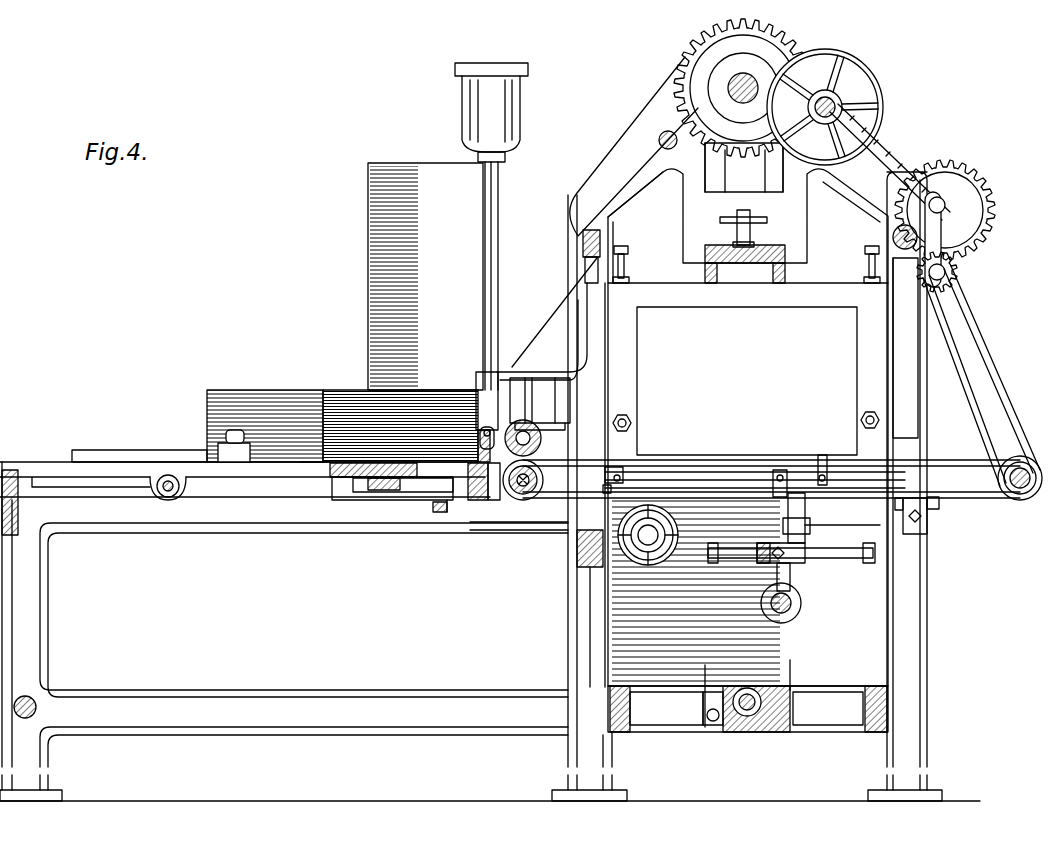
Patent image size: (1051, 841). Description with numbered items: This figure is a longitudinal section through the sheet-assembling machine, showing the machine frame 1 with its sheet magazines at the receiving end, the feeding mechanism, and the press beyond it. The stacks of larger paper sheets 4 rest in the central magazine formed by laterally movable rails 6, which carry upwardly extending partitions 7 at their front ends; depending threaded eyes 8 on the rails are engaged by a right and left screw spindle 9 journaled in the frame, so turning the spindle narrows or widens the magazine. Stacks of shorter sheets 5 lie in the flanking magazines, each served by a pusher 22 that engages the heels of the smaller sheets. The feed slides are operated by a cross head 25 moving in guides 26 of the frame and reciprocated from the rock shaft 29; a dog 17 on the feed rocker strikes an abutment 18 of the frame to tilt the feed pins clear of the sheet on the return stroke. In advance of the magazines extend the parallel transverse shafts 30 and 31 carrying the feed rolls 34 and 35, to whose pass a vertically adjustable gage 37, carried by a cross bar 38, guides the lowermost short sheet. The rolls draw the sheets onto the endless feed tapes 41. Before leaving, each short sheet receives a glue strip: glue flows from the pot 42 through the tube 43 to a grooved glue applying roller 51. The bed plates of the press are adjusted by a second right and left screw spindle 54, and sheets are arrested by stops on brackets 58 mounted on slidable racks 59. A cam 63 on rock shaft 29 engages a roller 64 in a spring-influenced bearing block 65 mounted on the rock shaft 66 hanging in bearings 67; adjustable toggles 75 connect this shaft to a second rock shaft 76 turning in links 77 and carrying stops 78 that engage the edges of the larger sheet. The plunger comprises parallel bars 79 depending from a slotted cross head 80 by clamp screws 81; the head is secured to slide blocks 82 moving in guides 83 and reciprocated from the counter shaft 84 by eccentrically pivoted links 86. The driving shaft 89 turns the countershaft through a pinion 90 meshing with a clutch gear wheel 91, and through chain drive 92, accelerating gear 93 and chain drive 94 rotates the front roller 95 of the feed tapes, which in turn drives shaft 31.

The machine frame 1 is at (357, 480).
The larger paper sheets 4 is at (288, 396).
The shorter sheets 5 is at (433, 396).
The laterally movable rails 6 is at (120, 470).
The plates or partitions 7 is at (366, 236).
The threaded eyes 8 is at (187, 498).
The right and left screw spindle 9 is at (166, 493).
The dog 17 is at (447, 512).
The abutment 18 is at (432, 513).
The pusher 22 is at (318, 462).
The cross head 25 is at (397, 490).
The guides 26 is at (365, 495).
The rock shaft 29 is at (799, 599).
The transverse shaft 30 is at (525, 428).
The transverse shaft 31 is at (523, 492).
The feed roll 34 is at (542, 441).
The feed roll 35 is at (544, 480).
The vertically adjustable gage 37 is at (485, 370).
The cross bar 38 is at (478, 503).
The endless feed tapes 41 is at (977, 497).
The glue pot 42 is at (520, 110).
The tube 43 is at (517, 202).
The glue applying roller 51 is at (497, 455).
The right and left screw spindle 54 is at (747, 714).
The bracket 58 is at (927, 520).
The rack 59 is at (840, 512).
The cam 63 is at (790, 690).
The roller 64 is at (773, 594).
The bearing block 65 is at (775, 573).
The rock shaft 66 is at (840, 558).
The bearings 67 is at (718, 548).
The adjustable toggles 75 is at (808, 514).
The rock shaft 76 is at (845, 480).
The links 77 is at (623, 470).
The stops 78 is at (618, 467).
The plunger bars 79 is at (745, 456).
The slotted cross head 80 is at (777, 251).
The clamp screws 81 is at (740, 233).
The slide blocks 82 is at (768, 208).
The guides 83 is at (688, 223).
The counter shaft 84 is at (755, 80).
The eccentrically pivoted links 86 is at (744, 167).
The driving shaft 89 is at (843, 112).
The pinion 90 is at (843, 84).
The clutch gear wheel 91 is at (683, 63).
The chain drive 92 is at (918, 151).
The accelerating gear 93 is at (954, 251).
The chain drive 94 is at (976, 346).
The front roller 95 is at (1020, 492).